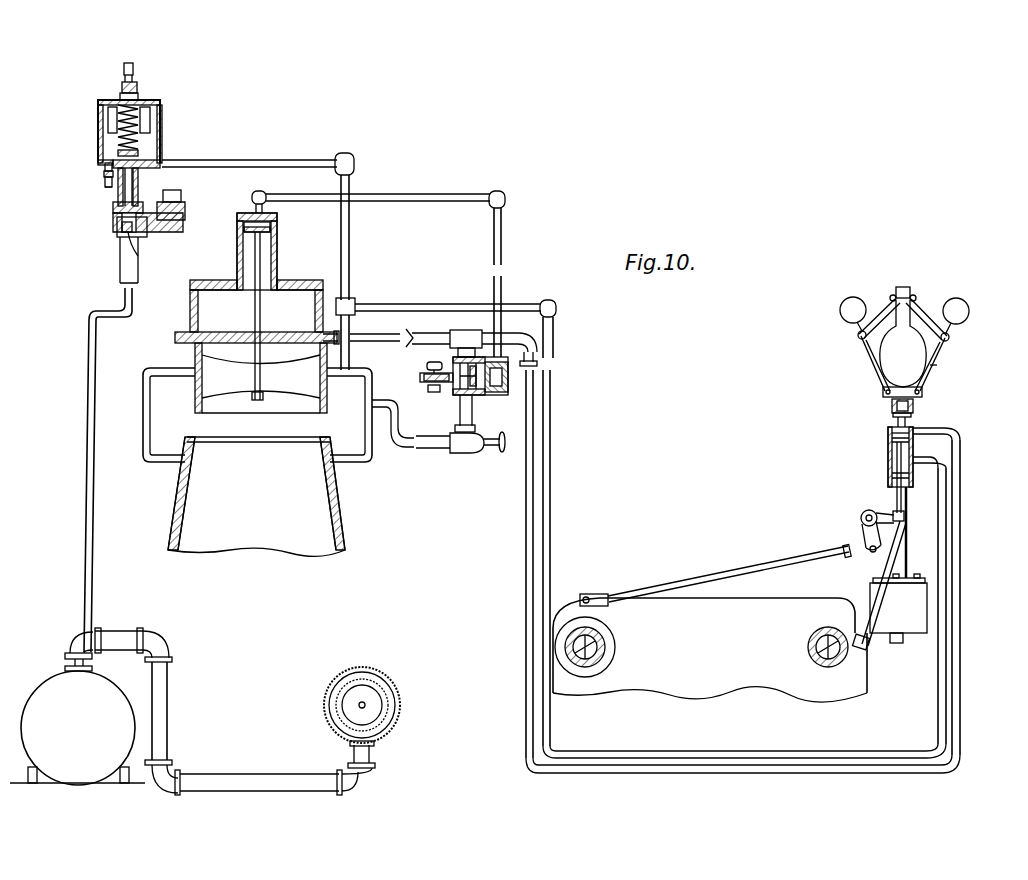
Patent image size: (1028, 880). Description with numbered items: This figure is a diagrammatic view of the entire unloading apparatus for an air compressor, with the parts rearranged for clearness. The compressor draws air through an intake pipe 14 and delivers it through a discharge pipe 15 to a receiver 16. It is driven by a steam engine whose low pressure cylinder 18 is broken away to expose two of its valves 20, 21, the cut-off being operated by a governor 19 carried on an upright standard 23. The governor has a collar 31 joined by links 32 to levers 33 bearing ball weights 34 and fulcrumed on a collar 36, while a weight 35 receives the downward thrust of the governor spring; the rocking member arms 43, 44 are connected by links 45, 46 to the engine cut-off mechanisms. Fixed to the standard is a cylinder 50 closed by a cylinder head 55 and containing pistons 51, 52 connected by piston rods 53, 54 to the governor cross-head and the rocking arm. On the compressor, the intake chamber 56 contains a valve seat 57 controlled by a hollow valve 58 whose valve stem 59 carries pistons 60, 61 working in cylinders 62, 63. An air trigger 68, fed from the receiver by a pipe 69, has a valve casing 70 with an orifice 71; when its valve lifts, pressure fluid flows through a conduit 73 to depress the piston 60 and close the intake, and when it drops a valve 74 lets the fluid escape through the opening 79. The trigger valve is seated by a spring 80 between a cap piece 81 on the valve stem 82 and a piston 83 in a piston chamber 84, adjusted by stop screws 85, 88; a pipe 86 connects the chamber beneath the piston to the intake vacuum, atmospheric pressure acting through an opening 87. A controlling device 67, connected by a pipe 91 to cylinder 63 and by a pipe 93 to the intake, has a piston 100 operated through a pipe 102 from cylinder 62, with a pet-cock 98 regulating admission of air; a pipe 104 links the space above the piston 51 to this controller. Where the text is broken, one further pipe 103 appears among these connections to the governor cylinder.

The intake pipe 14 is at (340, 525).
The discharge pipe 15 is at (265, 783).
The receiver 16 is at (100, 688).
The low pressure cylinder 18 is at (790, 610).
The governor 19 is at (948, 360).
The valve 20 is at (606, 643).
The valve 21 is at (808, 645).
The upright standard 23 is at (908, 557).
The collar 31 is at (914, 283).
The links 32 is at (881, 305).
The levers 33 is at (872, 374).
The ball weights 34 is at (845, 318).
The weight 35 is at (885, 350).
The collar 36 is at (886, 398).
The arm 43 is at (887, 512).
The arm 44 is at (862, 534).
The link 45 is at (878, 605).
The link 46 is at (725, 577).
The cylinder 50 is at (888, 462).
The piston 51 is at (892, 440).
The piston 52 is at (892, 478).
The piston rod 53 is at (911, 416).
The piston rod 54 is at (901, 500).
The cylinder head 55 is at (898, 424).
The intake chamber 56 is at (363, 458).
The valve seat 57 is at (318, 442).
The valve 58 is at (320, 405).
The valve stem 59 is at (255, 320).
The piston 60 is at (243, 251).
The piston 61 is at (305, 292).
The cylinder 62 is at (280, 260).
The cylinder 63 is at (323, 318).
The pressure fluid controlling device 67 is at (481, 385).
The air trigger 68 is at (112, 187).
The pipe 69 is at (120, 256).
The valve casing 70 is at (117, 228).
The orifice 71 is at (138, 256).
The conduit 73 is at (150, 230).
The valve 74 is at (113, 210).
The opening 79 is at (181, 195).
The spring 80 is at (118, 125).
The cap piece 81 is at (138, 153).
The valve stem 82 is at (133, 184).
The piston 83 is at (113, 160).
The piston chamber 84 is at (162, 122).
The adjustable stop screw 85 is at (140, 96).
The pipe 86 is at (243, 160).
The opening 87 is at (112, 100).
The adjustable stop screw 88 is at (105, 179).
The pipe 91 is at (395, 341).
The pipe 93 is at (386, 404).
The pet-cock 98 is at (420, 377).
The piston 100 is at (508, 388).
The pipe 102 is at (385, 198).
The pipe 103 is at (421, 306).
The pipe 104 is at (526, 496).